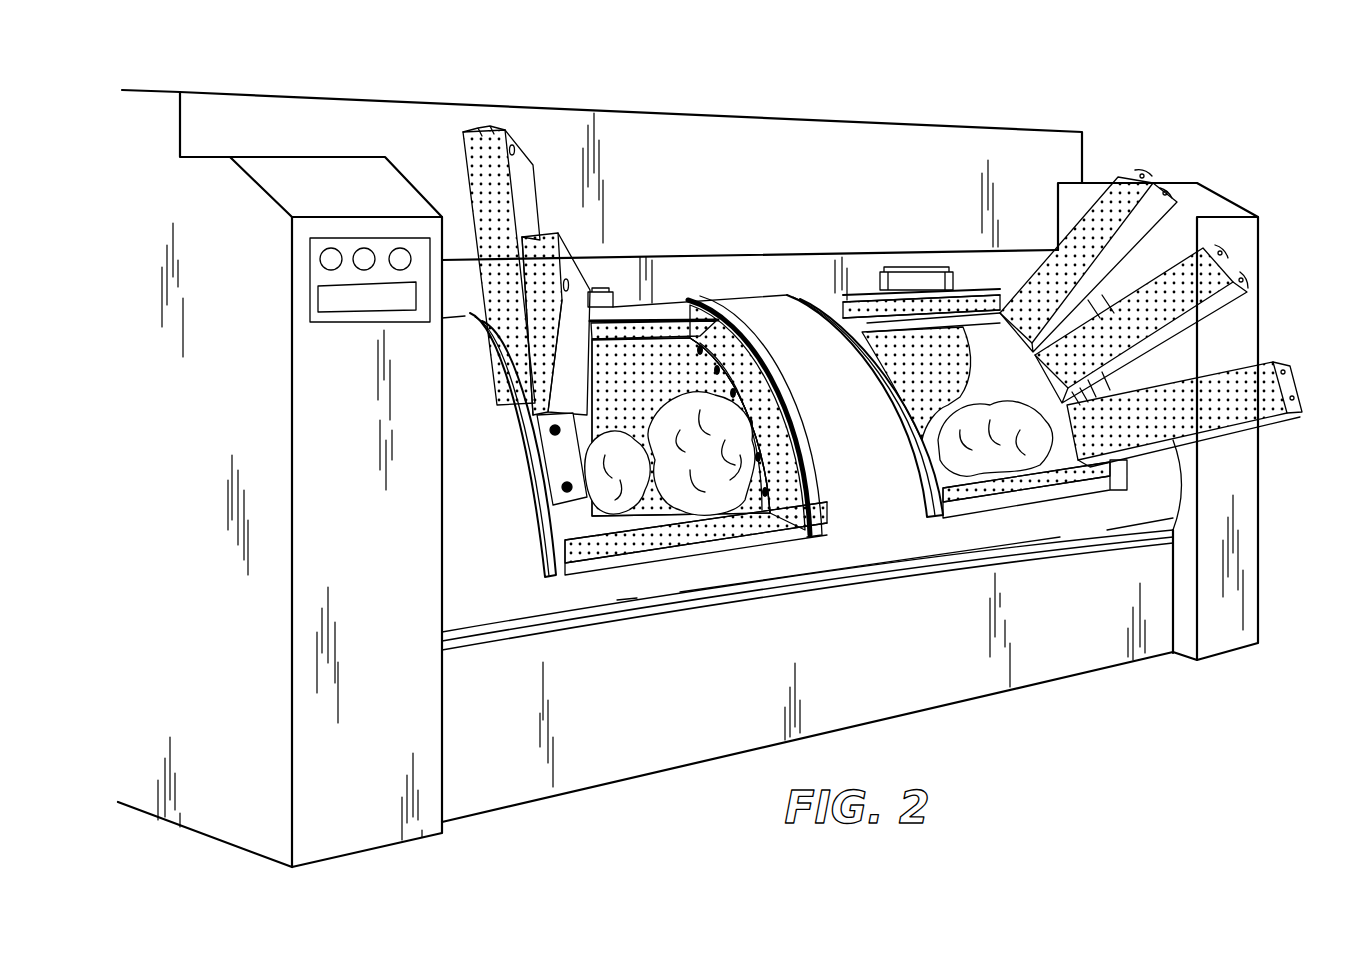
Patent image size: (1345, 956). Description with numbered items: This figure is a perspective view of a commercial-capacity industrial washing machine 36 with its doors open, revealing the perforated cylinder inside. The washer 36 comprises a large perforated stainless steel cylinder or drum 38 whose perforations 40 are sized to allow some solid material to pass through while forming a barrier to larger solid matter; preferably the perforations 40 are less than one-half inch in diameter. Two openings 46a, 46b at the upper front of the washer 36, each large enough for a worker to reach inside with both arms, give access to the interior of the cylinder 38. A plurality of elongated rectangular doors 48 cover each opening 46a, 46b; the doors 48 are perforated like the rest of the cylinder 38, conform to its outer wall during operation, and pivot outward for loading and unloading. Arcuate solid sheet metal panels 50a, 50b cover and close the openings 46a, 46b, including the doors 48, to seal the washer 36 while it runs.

The washing machine 36 is at (1082, 107).
The perforated cylinder 38 is at (718, 322).
The perforations 40 is at (898, 350).
The first opening 46a is at (620, 262).
The second opening 46b is at (963, 275).
The doors 48 is at (500, 132).
The first arcuate panel 50a is at (657, 313).
The second arcuate panel 50b is at (913, 290).